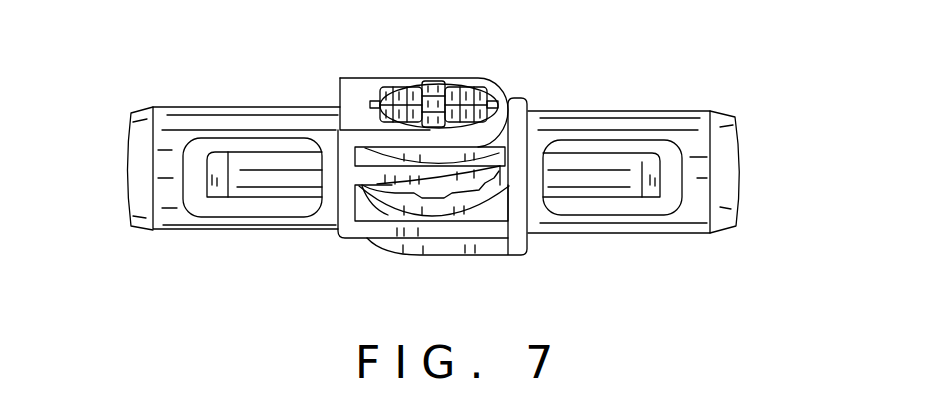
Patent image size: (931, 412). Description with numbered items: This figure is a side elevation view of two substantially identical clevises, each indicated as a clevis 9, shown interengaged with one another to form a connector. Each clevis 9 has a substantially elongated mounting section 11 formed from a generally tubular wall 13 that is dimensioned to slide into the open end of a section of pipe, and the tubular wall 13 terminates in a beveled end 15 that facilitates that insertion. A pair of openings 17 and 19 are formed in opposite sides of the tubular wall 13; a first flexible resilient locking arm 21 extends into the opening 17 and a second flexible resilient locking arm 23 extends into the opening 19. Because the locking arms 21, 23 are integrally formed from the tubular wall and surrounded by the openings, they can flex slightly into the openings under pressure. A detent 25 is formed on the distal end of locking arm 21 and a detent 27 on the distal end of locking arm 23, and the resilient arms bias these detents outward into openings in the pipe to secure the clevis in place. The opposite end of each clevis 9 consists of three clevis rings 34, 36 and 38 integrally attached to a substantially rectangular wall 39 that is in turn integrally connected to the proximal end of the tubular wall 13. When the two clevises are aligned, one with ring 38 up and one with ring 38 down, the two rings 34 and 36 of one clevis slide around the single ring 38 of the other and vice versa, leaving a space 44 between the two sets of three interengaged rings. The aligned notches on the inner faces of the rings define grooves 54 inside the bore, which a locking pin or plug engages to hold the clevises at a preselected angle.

The clevis 9 is at (318, 77).
The mounting section 11 is at (195, 107).
The tubular wall 13 is at (175, 212).
The beveled end 15 is at (140, 138).
The opening 17 is at (195, 162).
The opening 19 is at (627, 203).
The first flexible resilient locking arm 21 is at (272, 178).
The second flexible resilient locking arm 23 is at (597, 177).
The detent 25 is at (216, 182).
The detent 27 is at (645, 182).
The clevis ring 34 is at (407, 83).
The clevis ring 36 is at (367, 238).
The clevis ring 38 is at (490, 157).
The rectangular wall 39 is at (347, 155).
The space 44 is at (509, 183).
The grooves 54 is at (432, 90).